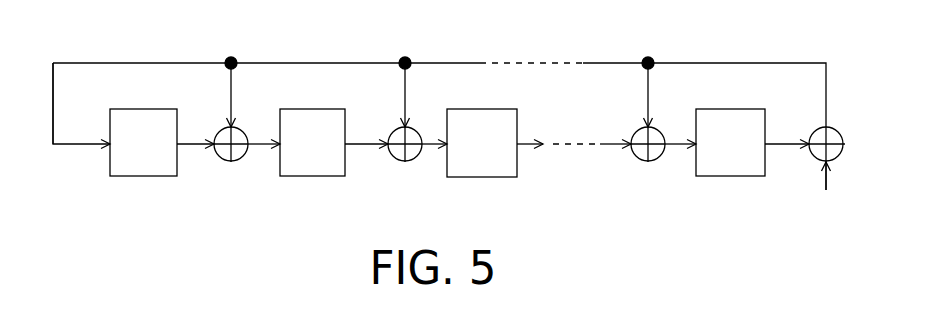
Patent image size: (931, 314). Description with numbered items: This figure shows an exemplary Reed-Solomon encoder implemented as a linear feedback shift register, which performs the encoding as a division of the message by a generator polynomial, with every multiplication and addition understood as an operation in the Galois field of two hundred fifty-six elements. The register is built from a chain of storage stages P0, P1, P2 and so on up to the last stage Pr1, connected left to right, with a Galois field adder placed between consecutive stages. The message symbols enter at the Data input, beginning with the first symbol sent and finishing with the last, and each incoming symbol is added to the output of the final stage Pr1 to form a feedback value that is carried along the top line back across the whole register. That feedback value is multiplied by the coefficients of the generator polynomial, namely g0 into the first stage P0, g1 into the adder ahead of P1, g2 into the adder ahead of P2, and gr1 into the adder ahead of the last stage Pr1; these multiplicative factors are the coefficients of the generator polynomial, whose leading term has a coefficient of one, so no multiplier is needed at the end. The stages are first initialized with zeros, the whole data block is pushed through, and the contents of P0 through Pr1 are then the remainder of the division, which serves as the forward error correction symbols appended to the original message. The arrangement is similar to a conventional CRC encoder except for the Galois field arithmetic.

The generator polynomial coefficient g0 is at (66, 103).
The generator polynomial coefficient g1 is at (225, 126).
The generator polynomial coefficient g2 is at (401, 126).
The generator polynomial coefficient g(r-1) gr1 is at (629, 126).
The shift register stage P0 is at (143, 142).
The shift register stage P1 is at (312, 142).
The shift register stage P2 is at (482, 143).
The shift register stage P(r-1) Pr1 is at (730, 142).
The data input Data is at (826, 186).